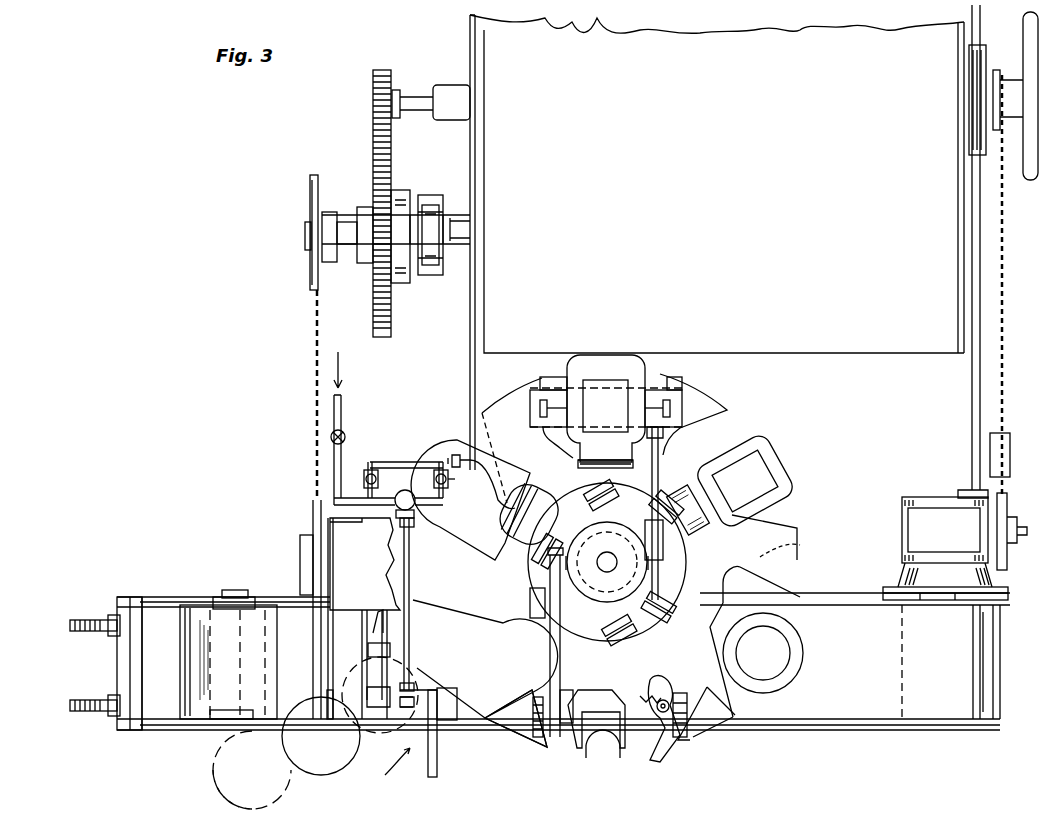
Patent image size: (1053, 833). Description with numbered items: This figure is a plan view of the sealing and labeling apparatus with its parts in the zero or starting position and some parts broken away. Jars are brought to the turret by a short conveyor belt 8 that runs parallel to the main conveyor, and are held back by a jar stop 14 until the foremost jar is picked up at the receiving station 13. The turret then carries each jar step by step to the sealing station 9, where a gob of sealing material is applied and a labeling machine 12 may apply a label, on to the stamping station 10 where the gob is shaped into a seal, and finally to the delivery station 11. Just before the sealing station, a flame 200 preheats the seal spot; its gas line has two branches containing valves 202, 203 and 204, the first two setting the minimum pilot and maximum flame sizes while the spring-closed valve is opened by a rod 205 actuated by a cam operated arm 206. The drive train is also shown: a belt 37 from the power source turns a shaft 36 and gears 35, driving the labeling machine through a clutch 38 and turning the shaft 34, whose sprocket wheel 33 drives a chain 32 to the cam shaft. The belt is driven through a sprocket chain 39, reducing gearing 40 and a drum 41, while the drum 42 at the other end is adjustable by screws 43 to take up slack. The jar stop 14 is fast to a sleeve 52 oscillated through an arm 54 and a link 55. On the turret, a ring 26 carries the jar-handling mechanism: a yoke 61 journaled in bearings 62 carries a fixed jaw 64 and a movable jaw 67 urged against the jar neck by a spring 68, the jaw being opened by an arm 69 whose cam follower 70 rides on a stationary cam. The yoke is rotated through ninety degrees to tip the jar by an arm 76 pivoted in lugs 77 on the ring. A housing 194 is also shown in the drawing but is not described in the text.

The short conveyor belt 8 is at (872, 720).
The sealing station 9 is at (607, 343).
The stamping station 10 is at (800, 442).
The delivery station 11 is at (816, 676).
The labeling machine 12 is at (717, 242).
The receiving station 13 is at (383, 767).
The jar stop 14 is at (438, 766).
The ring 26 is at (800, 548).
The chain 32 is at (313, 518).
The sprocket wheel 33 is at (311, 200).
The shaft 34 is at (306, 233).
The gears 35 is at (372, 158).
The shaft 36 is at (415, 105).
The belt 37 is at (978, 40).
The clutch 38 is at (426, 190).
The sprocket chain 39 is at (1004, 208).
The reducing gearing 40 is at (945, 548).
The drum 41 is at (905, 645).
The drum 42 is at (282, 655).
The screws 43 is at (84, 704).
The sleeve 52 is at (390, 713).
The arm 54 is at (368, 675).
The link 55 is at (395, 633).
The yoke 61 is at (587, 695).
The bearings 62 is at (690, 405).
The jaw 64 is at (603, 744).
The movable jaw 67 is at (678, 775).
The spring 68 is at (650, 680).
The arm 69 is at (552, 380).
The cam follower 70 is at (585, 368).
The arm 76 is at (662, 448).
The lugs 77 is at (668, 640).
The housing 194 is at (365, 564).
The flame 200 is at (518, 505).
The valve 202 is at (362, 478).
The valve 203 is at (432, 478).
The valve 204 is at (410, 508).
The rod 205 is at (410, 594).
The cam operated arm 206 is at (457, 702).